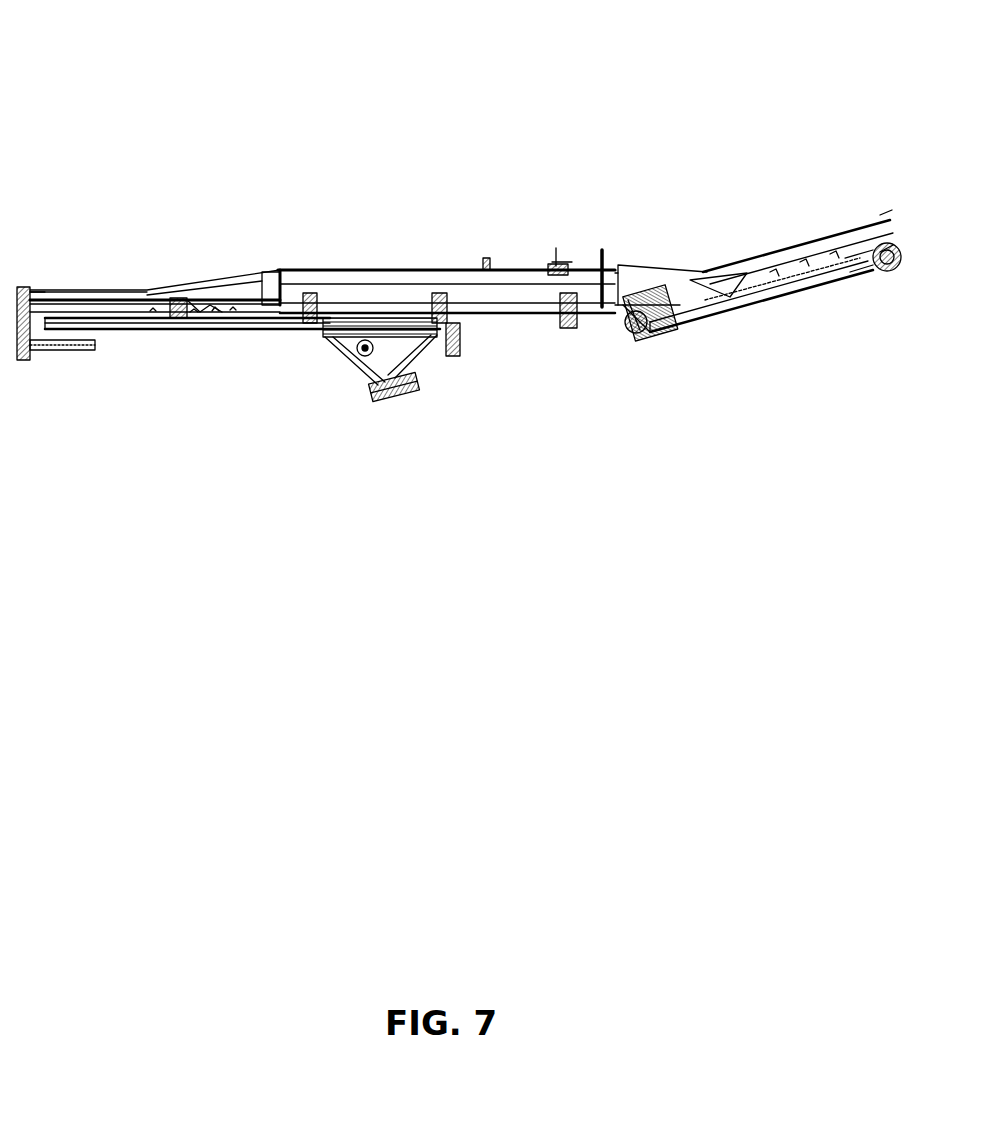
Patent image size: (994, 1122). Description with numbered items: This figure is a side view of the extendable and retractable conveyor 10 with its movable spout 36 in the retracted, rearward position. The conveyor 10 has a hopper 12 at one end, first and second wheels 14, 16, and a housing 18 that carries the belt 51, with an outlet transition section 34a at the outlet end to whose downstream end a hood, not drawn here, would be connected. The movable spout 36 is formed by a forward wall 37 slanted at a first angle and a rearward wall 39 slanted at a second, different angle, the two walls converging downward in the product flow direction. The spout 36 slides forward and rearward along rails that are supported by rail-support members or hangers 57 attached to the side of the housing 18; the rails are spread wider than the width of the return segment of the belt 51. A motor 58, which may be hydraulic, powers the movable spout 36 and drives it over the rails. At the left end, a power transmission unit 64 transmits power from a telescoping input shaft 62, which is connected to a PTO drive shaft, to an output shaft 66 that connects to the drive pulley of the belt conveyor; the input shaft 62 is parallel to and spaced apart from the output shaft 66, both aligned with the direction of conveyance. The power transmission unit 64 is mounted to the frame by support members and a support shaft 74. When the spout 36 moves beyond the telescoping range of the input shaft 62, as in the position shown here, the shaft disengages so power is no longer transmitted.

The extendable and retractable conveyor 10 is at (567, 202).
The hopper 12 is at (765, 282).
The first wheel 14 is at (677, 333).
The second wheel 16 is at (885, 275).
The housing 18 is at (357, 278).
The outlet transition section 34a is at (213, 287).
The movable spout 36 is at (398, 396).
The forward wall 37 is at (362, 352).
The rearward wall 39 is at (420, 360).
The belt 51 is at (537, 316).
The rail-support members or hangers 57 is at (307, 318).
The motor 58 is at (460, 356).
The input shaft 62 is at (70, 352).
The power transmission unit 64 is at (27, 288).
The output shaft 66 is at (84, 303).
The support shaft 74 is at (115, 303).